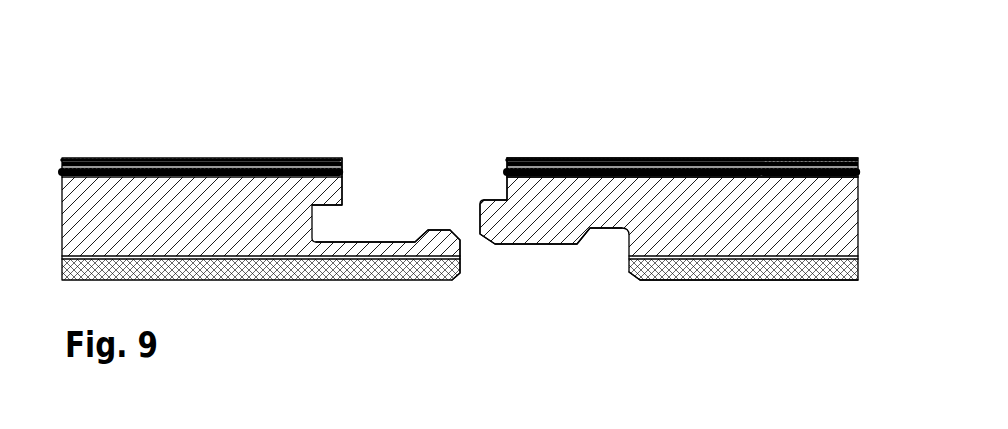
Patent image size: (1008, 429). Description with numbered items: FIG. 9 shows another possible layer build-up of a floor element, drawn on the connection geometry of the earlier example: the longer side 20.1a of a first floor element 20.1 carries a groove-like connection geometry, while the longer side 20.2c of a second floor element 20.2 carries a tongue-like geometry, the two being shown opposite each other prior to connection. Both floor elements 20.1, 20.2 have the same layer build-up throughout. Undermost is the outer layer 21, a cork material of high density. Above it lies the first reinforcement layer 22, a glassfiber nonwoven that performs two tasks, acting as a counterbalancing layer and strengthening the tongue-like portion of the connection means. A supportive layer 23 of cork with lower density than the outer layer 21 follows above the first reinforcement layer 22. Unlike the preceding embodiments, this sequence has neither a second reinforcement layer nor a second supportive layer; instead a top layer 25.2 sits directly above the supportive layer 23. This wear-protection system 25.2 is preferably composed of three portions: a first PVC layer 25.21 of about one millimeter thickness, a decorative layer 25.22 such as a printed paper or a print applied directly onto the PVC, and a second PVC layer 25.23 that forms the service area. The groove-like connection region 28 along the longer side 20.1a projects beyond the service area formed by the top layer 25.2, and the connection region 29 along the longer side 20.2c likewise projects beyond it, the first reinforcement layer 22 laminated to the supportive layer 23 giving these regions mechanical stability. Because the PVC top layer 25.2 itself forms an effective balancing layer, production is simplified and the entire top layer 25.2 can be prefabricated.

The first floor element 20.1 is at (296, 296).
The longer side of the first floor element 20.1a is at (372, 118).
The second floor element 20.2 is at (504, 222).
The longer side of the second floor element 20.2c is at (568, 90).
The outer layer 21 is at (797, 268).
The first reinforcement layer 22 is at (715, 260).
The supportive layer 23 is at (672, 243).
The top layer 25.2 is at (688, 134).
The first PVC layer 25.21 is at (592, 163).
The decorative layer 25.22 is at (660, 162).
The second PVC layer 25.23 is at (745, 160).
The groove-like connection region 28 is at (400, 314).
The connection region 29 is at (531, 316).